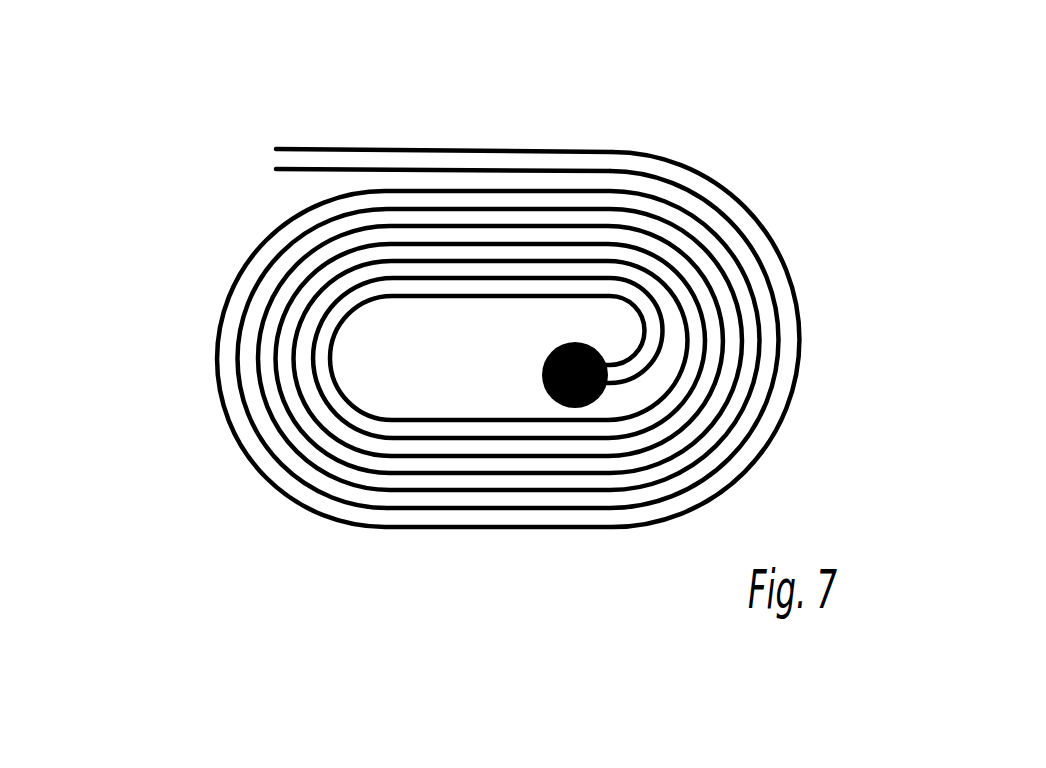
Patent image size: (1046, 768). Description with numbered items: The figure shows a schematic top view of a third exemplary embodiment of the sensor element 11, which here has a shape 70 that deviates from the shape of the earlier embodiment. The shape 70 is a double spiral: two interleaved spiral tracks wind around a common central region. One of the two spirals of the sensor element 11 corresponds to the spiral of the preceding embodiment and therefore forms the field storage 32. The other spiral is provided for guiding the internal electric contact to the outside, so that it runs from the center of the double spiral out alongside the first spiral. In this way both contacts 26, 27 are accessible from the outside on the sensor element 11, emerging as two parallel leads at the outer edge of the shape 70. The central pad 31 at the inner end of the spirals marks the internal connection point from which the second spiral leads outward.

The sensor element 11 is at (245, 94).
The contact 26 is at (312, 149).
The contact 27 is at (300, 172).
The shape 70 is at (819, 180).
The field storage 32 is at (271, 402).
The contact pad 31 is at (550, 400).